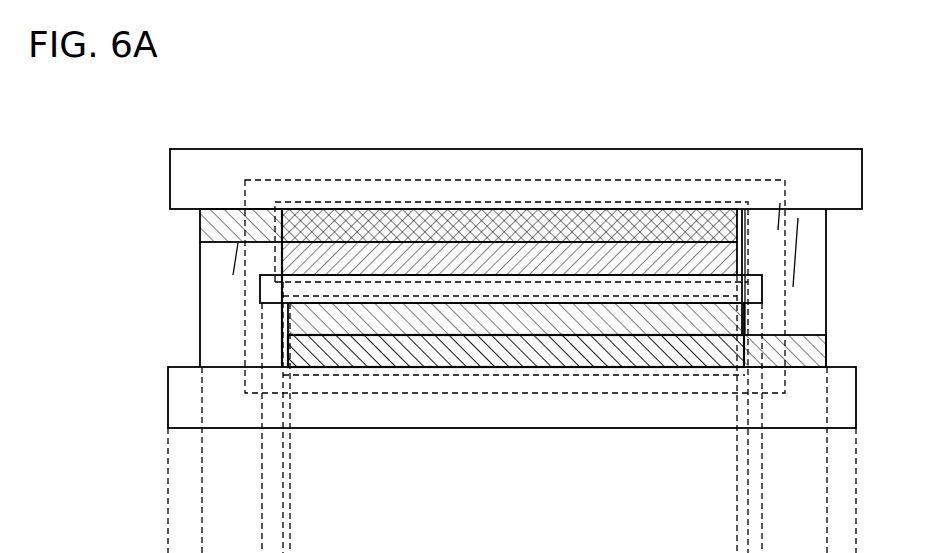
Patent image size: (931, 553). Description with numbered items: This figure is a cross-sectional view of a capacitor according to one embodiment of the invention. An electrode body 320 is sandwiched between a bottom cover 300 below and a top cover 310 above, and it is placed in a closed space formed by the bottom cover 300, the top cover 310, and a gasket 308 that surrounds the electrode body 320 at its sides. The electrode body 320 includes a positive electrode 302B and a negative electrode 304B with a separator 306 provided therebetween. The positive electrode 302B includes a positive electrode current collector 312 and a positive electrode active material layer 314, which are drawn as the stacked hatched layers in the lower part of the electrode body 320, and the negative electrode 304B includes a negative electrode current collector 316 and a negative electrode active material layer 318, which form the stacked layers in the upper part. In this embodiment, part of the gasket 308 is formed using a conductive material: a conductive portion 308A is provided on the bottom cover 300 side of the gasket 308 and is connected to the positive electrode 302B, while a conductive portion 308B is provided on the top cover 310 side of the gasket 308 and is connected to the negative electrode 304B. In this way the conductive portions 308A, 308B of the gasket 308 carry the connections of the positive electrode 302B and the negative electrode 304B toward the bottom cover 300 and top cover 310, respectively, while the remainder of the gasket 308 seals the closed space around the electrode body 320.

The bottom cover 300 is at (813, 400).
The positive electrode 302B is at (353, 378).
The negative electrode 304B is at (650, 202).
The separator 306 is at (755, 287).
The gasket 308 is at (230, 238).
The conductive portion 308A is at (807, 287).
The conductive portion 308B is at (208, 300).
The top cover 310 is at (373, 172).
The positive electrode current collector 312 is at (474, 360).
The positive electrode active material layer 314 is at (603, 328).
The negative electrode current collector 316 is at (463, 208).
The negative electrode active material layer 318 is at (565, 257).
The electrode body 320 is at (702, 393).